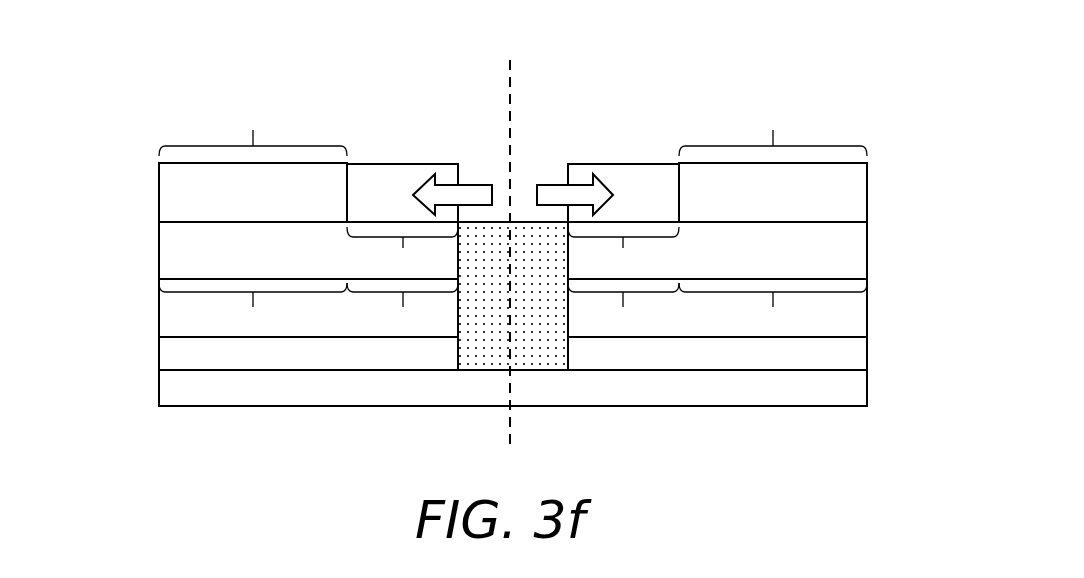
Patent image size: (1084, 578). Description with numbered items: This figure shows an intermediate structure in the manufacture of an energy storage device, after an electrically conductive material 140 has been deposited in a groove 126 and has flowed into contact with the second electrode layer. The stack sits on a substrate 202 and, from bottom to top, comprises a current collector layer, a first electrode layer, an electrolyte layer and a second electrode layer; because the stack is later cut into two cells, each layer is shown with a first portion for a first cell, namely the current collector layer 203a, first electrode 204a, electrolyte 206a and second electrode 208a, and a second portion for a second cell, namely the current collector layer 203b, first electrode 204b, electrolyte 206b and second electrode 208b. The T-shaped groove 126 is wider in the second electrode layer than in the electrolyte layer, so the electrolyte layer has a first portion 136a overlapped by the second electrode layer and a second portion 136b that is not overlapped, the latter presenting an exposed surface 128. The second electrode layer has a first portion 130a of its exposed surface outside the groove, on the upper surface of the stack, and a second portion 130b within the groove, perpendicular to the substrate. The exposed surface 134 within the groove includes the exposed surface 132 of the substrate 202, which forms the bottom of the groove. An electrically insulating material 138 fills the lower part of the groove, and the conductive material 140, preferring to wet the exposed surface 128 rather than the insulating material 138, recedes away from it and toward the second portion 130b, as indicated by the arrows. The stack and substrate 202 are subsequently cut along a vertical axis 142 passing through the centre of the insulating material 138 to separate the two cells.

The groove 126 is at (538, 156).
The exposed surface of the electrolyte layer 128 is at (513, 254).
The first portion of the exposed surface of the second electrode layer 130a is at (513, 126).
The second portion of the exposed surface of the second electrode layer 130b is at (347, 206).
The exposed surface of the substrate 132 is at (555, 372).
The exposed surface within the groove 134 is at (568, 353).
The first portion of the electrolyte layer 136a is at (513, 311).
The second portion of the electrolyte layer 136b is at (513, 311).
The electrically insulating material 138 is at (470, 360).
The electrically conductive material 140 is at (400, 165).
The axis 142 is at (510, 67).
The substrate 202 is at (867, 397).
The current collector layer of the first cell 203a is at (159, 360).
The current collector layer of the second cell 203b is at (867, 357).
The first electrode of the first cell 204a is at (159, 320).
The first electrode of the second cell 204b is at (867, 317).
The electrolyte of the first cell 206a is at (159, 257).
The electrolyte of the second cell 206b is at (867, 257).
The second electrode of the first cell 208a is at (159, 193).
The second electrode of the second cell 208b is at (867, 193).